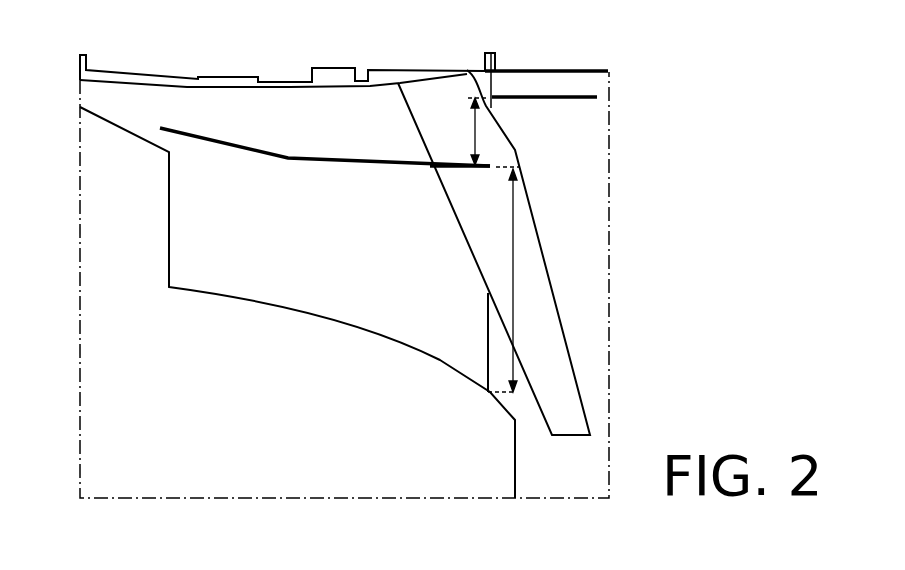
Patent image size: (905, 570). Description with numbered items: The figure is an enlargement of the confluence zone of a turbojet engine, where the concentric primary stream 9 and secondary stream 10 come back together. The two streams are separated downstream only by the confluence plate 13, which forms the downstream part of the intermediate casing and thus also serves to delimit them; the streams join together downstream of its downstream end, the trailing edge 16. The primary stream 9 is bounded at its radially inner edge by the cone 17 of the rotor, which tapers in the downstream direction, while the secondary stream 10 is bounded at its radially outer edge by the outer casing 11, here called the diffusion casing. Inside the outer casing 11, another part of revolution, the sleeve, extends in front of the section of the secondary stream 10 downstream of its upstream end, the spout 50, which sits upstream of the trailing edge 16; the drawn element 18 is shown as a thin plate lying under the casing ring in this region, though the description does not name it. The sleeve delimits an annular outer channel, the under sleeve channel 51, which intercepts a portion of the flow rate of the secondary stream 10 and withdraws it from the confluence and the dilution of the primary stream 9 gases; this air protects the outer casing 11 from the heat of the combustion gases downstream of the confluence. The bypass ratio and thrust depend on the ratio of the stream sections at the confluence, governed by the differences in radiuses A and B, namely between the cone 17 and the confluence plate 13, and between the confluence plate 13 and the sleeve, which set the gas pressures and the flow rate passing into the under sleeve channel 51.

The primary stream 9 is at (472, 222).
The secondary stream 10 is at (331, 123).
The outer casing 11 is at (282, 82).
The confluence plate 13 is at (303, 163).
The trailing edge 16 is at (497, 167).
The cone 17 is at (512, 407).
The abradable plate 18 is at (570, 95).
The spout 50 is at (470, 73).
The under sleeve channel 51 is at (547, 84).
The difference in radiuses A is at (513, 257).
The difference in radiuses B is at (475, 127).